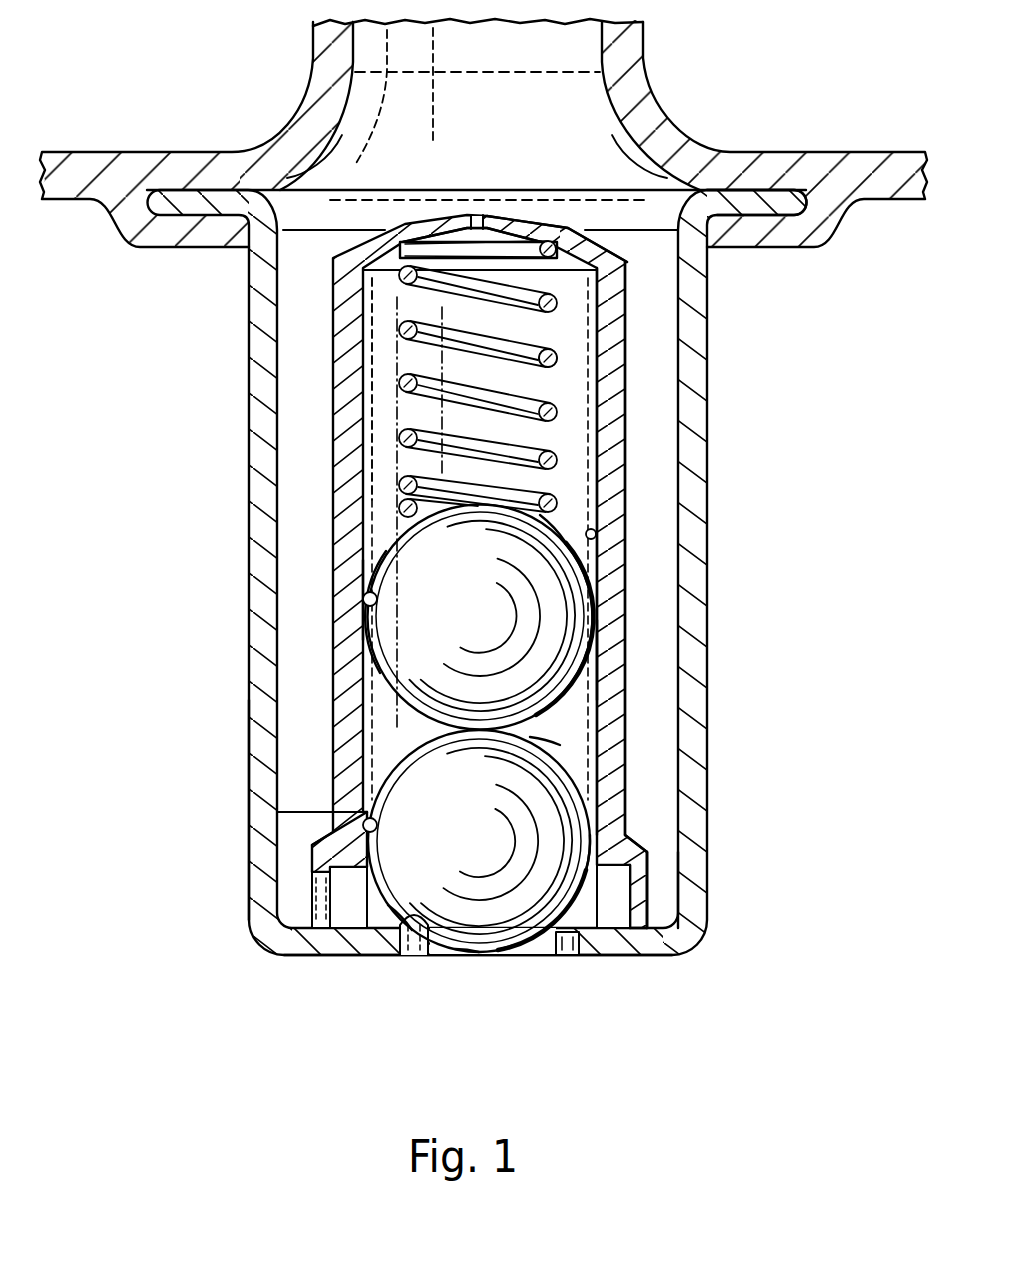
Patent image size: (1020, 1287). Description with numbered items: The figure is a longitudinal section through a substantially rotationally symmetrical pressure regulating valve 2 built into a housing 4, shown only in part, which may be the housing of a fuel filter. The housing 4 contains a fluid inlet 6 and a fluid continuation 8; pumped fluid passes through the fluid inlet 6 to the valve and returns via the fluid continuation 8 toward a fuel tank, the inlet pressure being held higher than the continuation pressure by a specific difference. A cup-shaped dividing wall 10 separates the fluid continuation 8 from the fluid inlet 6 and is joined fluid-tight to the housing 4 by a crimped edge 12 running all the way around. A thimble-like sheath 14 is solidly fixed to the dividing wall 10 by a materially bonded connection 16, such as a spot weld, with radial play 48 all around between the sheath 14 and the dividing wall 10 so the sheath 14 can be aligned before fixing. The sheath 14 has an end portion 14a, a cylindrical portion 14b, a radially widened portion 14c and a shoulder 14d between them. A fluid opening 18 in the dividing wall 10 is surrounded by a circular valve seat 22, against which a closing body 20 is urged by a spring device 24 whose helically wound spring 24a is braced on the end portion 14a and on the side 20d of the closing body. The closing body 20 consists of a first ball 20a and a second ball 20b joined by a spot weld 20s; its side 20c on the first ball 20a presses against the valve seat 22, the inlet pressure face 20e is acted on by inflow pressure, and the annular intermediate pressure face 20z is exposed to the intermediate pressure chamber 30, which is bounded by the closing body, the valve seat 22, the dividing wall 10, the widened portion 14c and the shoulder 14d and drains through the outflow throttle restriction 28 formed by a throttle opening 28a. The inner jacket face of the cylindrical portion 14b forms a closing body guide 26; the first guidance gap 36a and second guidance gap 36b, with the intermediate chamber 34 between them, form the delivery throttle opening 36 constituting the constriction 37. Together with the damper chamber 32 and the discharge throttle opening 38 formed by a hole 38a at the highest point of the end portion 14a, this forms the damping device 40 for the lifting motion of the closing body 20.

The pressure regulating valve 2 is at (197, 748).
The housing 4 is at (119, 168).
The fluid inlet 6 is at (700, 1044).
The fluid continuation 8 is at (560, 113).
The dividing wall 10 is at (692, 542).
The crimped edge 12 is at (809, 234).
The sheath 14 is at (340, 391).
The end portion 14a is at (520, 230).
The cylindrical portion 14b is at (607, 452).
The radially widened portion 14c is at (634, 864).
The shoulder 14d is at (644, 851).
The materially bonded connection 16 is at (642, 889).
The fluid opening 18 is at (562, 958).
The closing body 20 is at (572, 762).
The first ball 20a is at (463, 816).
The second ball 20b is at (460, 579).
The side toward the fluid inlet 20c is at (522, 953).
The side remote from the fluid inlet 20d is at (568, 524).
The inlet pressure face 20e is at (457, 955).
The spot weld 20s is at (558, 733).
The intermediate pressure face 20z is at (390, 904).
The valve seat 22 is at (418, 920).
The spring device 24 is at (545, 397).
The helically wound spring 24a is at (555, 355).
The closing body guide 26 is at (596, 530).
The outflow throttle restriction 28 is at (296, 893).
The throttle opening 28a is at (322, 913).
The intermediate pressure chamber 30 is at (352, 913).
The damper chamber 32 is at (573, 306).
The intermediate chamber 34 is at (578, 690).
The delivery throttle opening 36 is at (352, 620).
The first guidance gap 36a is at (363, 812).
The second guidance gap 36b is at (363, 593).
The constriction 37 is at (583, 775).
The discharge throttle opening 38 is at (470, 213).
The hole 38a is at (474, 228).
The damping device 40 is at (378, 461).
The play 48 is at (653, 912).